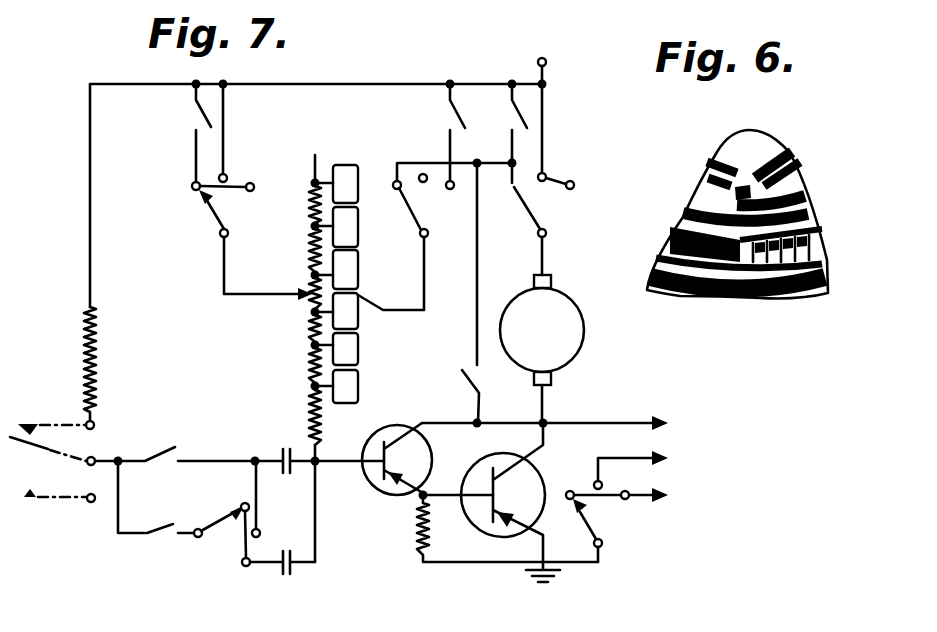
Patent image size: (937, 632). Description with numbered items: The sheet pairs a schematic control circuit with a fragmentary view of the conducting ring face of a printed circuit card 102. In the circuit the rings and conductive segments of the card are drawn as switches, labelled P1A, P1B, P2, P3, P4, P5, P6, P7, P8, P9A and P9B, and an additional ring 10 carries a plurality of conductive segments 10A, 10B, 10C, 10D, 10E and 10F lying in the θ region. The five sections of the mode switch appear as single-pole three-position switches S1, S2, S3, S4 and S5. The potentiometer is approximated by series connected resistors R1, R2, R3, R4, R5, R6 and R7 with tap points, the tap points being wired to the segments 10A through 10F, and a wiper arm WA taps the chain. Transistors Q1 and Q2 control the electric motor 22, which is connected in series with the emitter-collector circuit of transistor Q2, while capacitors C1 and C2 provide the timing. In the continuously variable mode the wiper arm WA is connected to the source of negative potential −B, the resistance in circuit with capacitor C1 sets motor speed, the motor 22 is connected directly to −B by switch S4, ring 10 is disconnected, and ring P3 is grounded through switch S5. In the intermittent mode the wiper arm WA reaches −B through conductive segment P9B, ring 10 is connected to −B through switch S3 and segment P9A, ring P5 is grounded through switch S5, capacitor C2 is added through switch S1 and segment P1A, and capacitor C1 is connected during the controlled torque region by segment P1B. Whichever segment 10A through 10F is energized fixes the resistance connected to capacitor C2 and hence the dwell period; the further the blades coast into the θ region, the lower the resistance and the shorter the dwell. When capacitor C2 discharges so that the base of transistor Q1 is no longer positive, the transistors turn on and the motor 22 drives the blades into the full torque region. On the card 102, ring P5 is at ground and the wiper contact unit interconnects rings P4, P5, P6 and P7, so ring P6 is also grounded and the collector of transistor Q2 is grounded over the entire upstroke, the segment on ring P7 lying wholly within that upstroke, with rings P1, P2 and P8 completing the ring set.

In FIG. 7, the source of negative potential B is at (556, 68).
In FIG. 7, the fixed resistor R1 is at (106, 364).
In FIG. 7, the fixed resistor R2 is at (299, 417).
In FIG. 7, the fixed resistor R3 is at (300, 365).
In FIG. 7, the series connected resistor R4 is at (300, 328).
In FIG. 7, the series connected resistor R5 is at (300, 288).
In FIG. 7, the series connected resistor R6 is at (300, 250).
In FIG. 7, the series connected resistor R7 is at (300, 204).
In FIG. 7, the capacitor C1 is at (287, 449).
In FIG. 7, the capacitor C2 is at (282, 549).
In FIG. 7, the mode switch section S1 is at (227, 513).
In FIG. 7, the mode switch section S2 is at (223, 205).
In FIG. 7, the mode switch section S3 is at (423, 205).
In FIG. 7, the mode switch section S4 is at (543, 160).
In FIG. 7, the mode switch section S5 is at (599, 530).
In FIG. 7, the transistor Q1 is at (432, 460).
In FIG. 7, the transistor Q2 is at (540, 456).
In FIG. 7, the electric motor 22 is at (583, 345).
In FIG. 7, the ring 10 is at (369, 284).
In FIG. 7, the conductive segment 10A is at (345, 386).
In FIG. 7, the conductive segment 10B is at (345, 349).
In FIG. 7, the conductive segment 10C is at (345, 311).
In FIG. 7, the conductive segment 10D is at (345, 269).
In FIG. 7, the conductive segment 10E is at (345, 227).
In FIG. 7, the conductive segment 10F is at (345, 184).
In FIG. 7, the wiper arm WA is at (268, 268).
In FIG. 6, the ring P1 is at (830, 290).
In FIG. 7, the conductive segment P1A is at (167, 520).
In FIG. 7, the conductive segment P1B is at (186, 446).
In FIG. 7, the ring P2 is at (71, 438).
In FIG. 6, the ring P2 is at (826, 267).
In FIG. 7, the ring P3 is at (363, 490).
In FIG. 6, the ring P3 is at (822, 242).
In FIG. 6, the ring P4 is at (812, 218).
In FIG. 7, the ring P5 is at (634, 496).
In FIG. 6, the ring P5 is at (810, 201).
In FIG. 7, the ring P6 is at (622, 422).
In FIG. 6, the ring P6 is at (805, 185).
In FIG. 7, the ring P7 is at (461, 396).
In FIG. 6, the ring P7 is at (775, 148).
In FIG. 7, the ring P8 is at (508, 123).
In FIG. 6, the ring P8 is at (796, 158).
In FIG. 7, the conductive segment P9A is at (440, 132).
In FIG. 6, the conductive segment P9A is at (703, 165).
In FIG. 7, the conductive segment P9B is at (182, 133).
In FIG. 6, the printed circuit card 102 is at (760, 223).